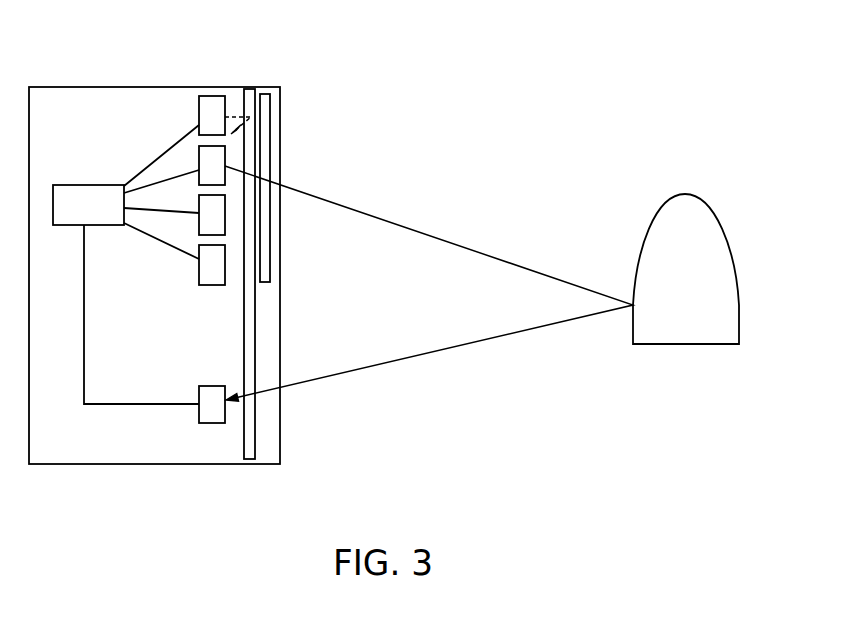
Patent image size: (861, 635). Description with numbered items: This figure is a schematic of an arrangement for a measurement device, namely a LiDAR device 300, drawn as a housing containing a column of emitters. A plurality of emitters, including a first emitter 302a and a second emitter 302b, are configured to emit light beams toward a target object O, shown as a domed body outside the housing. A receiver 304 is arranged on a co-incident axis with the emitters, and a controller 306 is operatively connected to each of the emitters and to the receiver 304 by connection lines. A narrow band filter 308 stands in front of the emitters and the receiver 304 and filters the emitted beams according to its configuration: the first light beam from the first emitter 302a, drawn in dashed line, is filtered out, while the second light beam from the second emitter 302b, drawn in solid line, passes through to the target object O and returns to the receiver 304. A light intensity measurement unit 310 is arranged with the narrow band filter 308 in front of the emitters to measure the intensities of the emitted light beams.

The LiDAR device 300 is at (280, 87).
The first emitter 302a is at (207, 88).
The second emitter 302b is at (158, 147).
The receiver 304 is at (210, 423).
The controller 306 is at (88, 185).
The narrow band filter 308 is at (255, 89).
The light intensity measurement unit 310 is at (270, 153).
The target object O is at (732, 262).